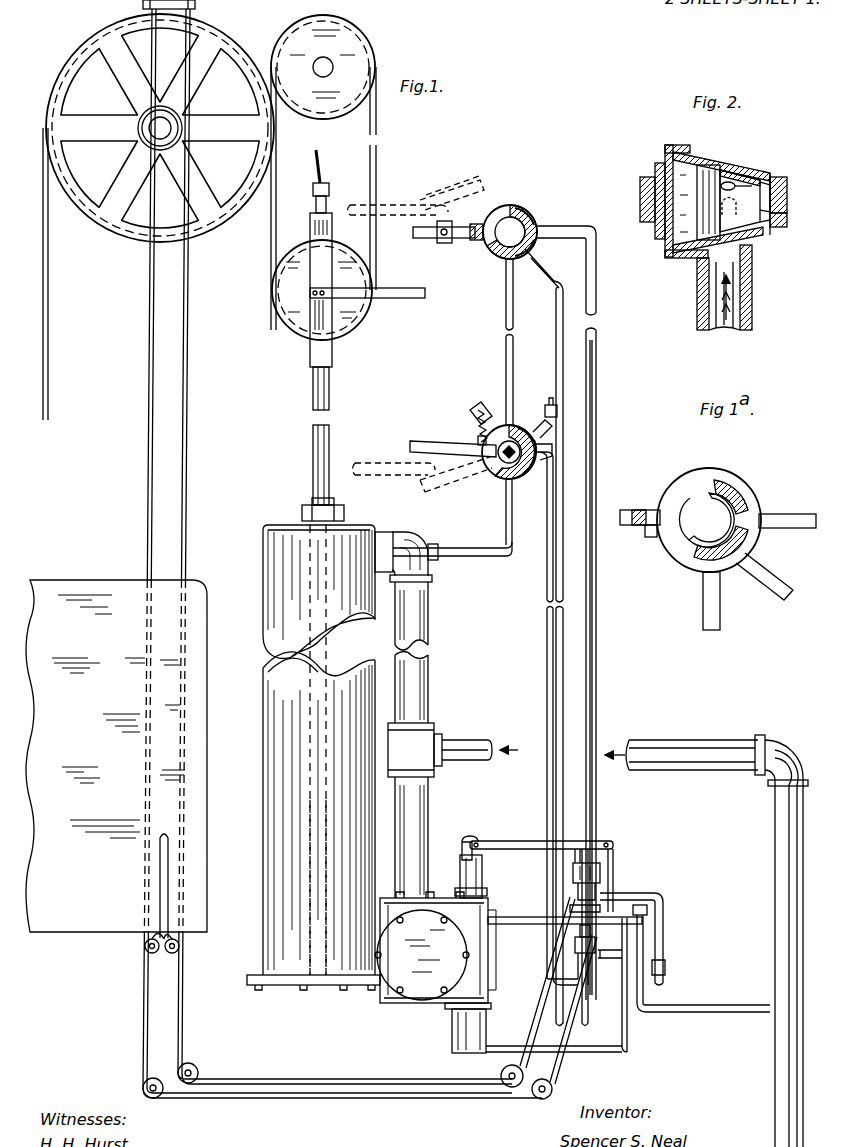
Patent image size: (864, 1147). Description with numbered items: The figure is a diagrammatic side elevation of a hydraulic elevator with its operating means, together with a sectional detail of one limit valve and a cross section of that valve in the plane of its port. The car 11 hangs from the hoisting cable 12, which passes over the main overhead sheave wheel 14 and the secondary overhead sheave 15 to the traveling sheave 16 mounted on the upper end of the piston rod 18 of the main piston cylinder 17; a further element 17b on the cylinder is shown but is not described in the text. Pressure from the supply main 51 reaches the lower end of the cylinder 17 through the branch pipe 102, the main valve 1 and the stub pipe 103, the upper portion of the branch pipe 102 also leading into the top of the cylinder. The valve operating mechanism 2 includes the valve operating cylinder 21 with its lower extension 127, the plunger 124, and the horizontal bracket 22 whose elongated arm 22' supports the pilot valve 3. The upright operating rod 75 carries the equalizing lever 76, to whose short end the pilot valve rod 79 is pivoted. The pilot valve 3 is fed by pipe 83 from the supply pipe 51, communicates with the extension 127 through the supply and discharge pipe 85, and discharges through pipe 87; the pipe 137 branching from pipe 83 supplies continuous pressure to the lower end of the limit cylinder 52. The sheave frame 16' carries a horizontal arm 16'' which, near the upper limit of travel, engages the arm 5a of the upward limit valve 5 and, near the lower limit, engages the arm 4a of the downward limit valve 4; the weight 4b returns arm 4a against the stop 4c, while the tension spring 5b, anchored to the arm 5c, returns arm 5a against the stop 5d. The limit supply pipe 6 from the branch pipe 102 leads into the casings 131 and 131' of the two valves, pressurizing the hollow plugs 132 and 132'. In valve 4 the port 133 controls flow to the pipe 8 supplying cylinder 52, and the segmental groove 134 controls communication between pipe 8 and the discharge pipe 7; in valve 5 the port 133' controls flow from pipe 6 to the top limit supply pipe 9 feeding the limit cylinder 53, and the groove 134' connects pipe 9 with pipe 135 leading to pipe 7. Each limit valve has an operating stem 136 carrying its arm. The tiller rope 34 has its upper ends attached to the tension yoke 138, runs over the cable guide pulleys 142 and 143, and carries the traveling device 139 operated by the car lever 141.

In FIG. 1, the main valve 1 is at (410, 1006).
In FIG. 1, the valve operating mechanism 2 is at (600, 860).
In FIG. 1, the pilot valve 3 is at (652, 894).
In FIG. 1, the downward limit valve 4 is at (520, 208).
In FIG. 1A, the downward limit valve 4 is at (690, 476).
In FIG. 1, the operating arm 4a is at (462, 240).
In FIG. 2, the operating arm 4a is at (640, 180).
In FIG. 1A, the operating arm 4a is at (640, 510).
In FIG. 1, the weight 4b is at (448, 226).
In FIG. 1, the stop 4c is at (477, 246).
In FIG. 1A, the stop 4c is at (653, 540).
In FIG. 1, the upward limit valve 5 is at (488, 478).
In FIG. 1, the operating arm 5a is at (440, 446).
In FIG. 1, the tension spring 5b is at (470, 436).
In FIG. 1, the arm 5c is at (480, 408).
In FIG. 1, the stop 5d is at (490, 432).
In FIG. 1, the limit supply pipe 6 is at (505, 521).
In FIG. 1A, the limit supply pipe 6 is at (705, 606).
In FIG. 1, the discharge pipe 7 is at (566, 272).
In FIG. 1A, the discharge pipe 7 is at (769, 592).
In FIG. 1, the supply pipe 8 is at (614, 544).
In FIG. 1A, the supply pipe 8 is at (788, 514).
In FIG. 1, the top limit supply pipe 9 is at (545, 565).
In FIG. 1, the car 11 is at (75, 925).
In FIG. 1, the hoisting cable 12 is at (50, 403).
In FIG. 1, the main overhead sheave wheel 14 is at (130, 238).
In FIG. 1, the secondary overhead sheave 15 is at (373, 54).
In FIG. 1, the traveling sheave 16 is at (304, 294).
In FIG. 1, the sheave frame 16' is at (295, 280).
In FIG. 1, the horizontal arm 16'' is at (367, 310).
In FIG. 1, the main piston cylinder 17 is at (262, 559).
In FIG. 1, the cylinder rod 17b is at (268, 850).
In FIG. 1, the piston rod 18 is at (309, 448).
In FIG. 1, the valve operating cylinder 21 is at (485, 990).
In FIG. 1, the horizontal bracket 22 is at (565, 932).
In FIG. 1, the elongated horizontal arm 22' is at (703, 963).
In FIG. 1, the tiller rope 34 is at (155, 470).
In FIG. 1, the pressure supply pipe 51 is at (476, 742).
In FIG. 1, the limit cylinder 52 is at (601, 872).
In FIG. 1, the limit cylinder 53 is at (586, 958).
In FIG. 1, the upright operating rod 75 is at (614, 845).
In FIG. 1, the equalizing lever 76 is at (598, 848).
In FIG. 1, the pilot valve rod 79 is at (603, 878).
In FIG. 1, the pilot supply pipe 83 is at (664, 968).
In FIG. 1, the supply and discharge pipe 85 is at (488, 1052).
In FIG. 1, the discharge pipe 87 is at (665, 910).
In FIG. 1, the branch pipe 102 is at (431, 691).
In FIG. 1, the stub pipe 103 is at (366, 976).
In FIG. 1, the plunger 124 is at (480, 848).
In FIG. 1, the lower extension 127 is at (486, 1030).
In FIG. 2, the valve casing 131 is at (716, 199).
In FIG. 1, the valve casing 131' is at (589, 435).
In FIG. 2, the hollow plug 132 is at (765, 188).
In FIG. 1, the plug 132' is at (532, 409).
In FIG. 1, the port 133 is at (549, 207).
In FIG. 2, the port 133 is at (797, 190).
In FIG. 1A, the port 133 is at (752, 486).
In FIG. 1, the radial port 133' is at (535, 479).
In FIG. 1, the segmental exterior groove 134 is at (549, 246).
In FIG. 2, the segmental exterior groove 134 is at (795, 197).
In FIG. 1A, the segmental exterior groove 134 is at (753, 547).
In FIG. 1, the segmental groove 134' is at (597, 417).
In FIG. 1, the pipe 135 is at (552, 412).
In FIG. 2, the operating stem 136 is at (787, 198).
In FIG. 1, the supply pipe 137 is at (600, 906).
In FIG. 1, the tension yoke 138 is at (197, 11).
In FIG. 1, the traveling device 139 is at (151, 953).
In FIG. 1, the car lever 141 is at (158, 884).
In FIG. 1, the cable guide pulley 142 is at (163, 1082).
In FIG. 1, the cable guide pulley 143 is at (538, 1100).